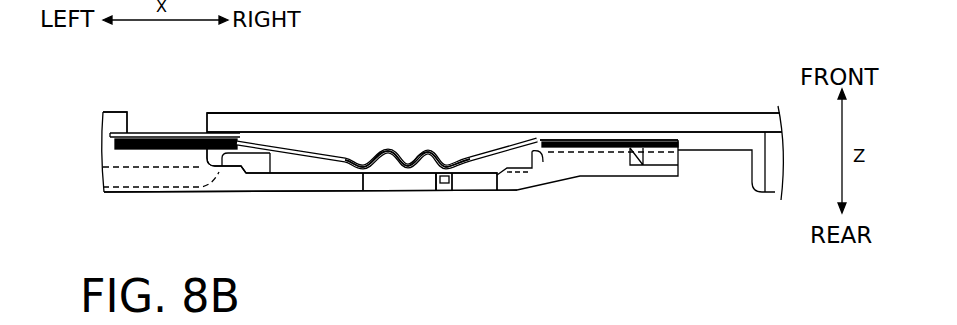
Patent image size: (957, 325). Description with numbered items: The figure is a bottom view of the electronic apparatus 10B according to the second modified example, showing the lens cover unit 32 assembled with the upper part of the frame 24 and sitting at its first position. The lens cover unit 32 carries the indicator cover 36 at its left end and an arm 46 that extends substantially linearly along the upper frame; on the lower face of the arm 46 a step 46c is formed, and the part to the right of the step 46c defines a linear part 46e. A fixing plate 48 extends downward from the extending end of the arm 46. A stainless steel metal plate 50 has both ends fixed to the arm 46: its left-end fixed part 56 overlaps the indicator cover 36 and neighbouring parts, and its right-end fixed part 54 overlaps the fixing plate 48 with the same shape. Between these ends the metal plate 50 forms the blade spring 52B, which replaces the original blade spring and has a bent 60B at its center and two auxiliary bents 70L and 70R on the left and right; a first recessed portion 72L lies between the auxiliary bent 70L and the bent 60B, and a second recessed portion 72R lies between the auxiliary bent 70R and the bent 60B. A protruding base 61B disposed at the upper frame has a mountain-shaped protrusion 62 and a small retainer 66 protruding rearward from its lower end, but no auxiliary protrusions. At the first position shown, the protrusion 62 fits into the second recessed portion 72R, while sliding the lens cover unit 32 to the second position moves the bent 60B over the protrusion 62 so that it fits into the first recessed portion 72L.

The electronic apparatus 10B is at (735, 30).
The frame 24 is at (592, 118).
The lens cover unit 32 is at (140, 157).
The indicator cover 36 is at (178, 145).
The arm 46 is at (296, 192).
The step 46c is at (372, 190).
The linear part 46e is at (386, 182).
The fixing plate 48 is at (657, 163).
The metal plate 50 is at (540, 128).
The blade spring 52B is at (267, 132).
The right-end fixed part 54 is at (655, 128).
The left-end fixed part 56 is at (150, 132).
The bent 60B is at (412, 152).
The protruding base 61B is at (437, 190).
The protrusion 62 is at (430, 148).
The retainer 66 is at (443, 190).
The auxiliary bent 70L is at (367, 160).
The auxiliary bent 70R is at (476, 150).
The first recessed portion 72L is at (387, 148).
The second recessed portion 72R is at (452, 162).